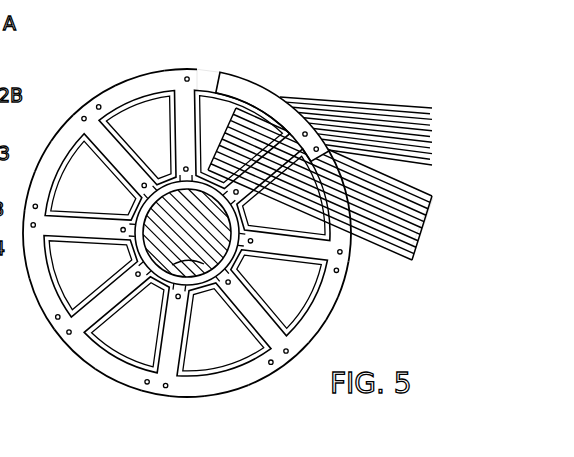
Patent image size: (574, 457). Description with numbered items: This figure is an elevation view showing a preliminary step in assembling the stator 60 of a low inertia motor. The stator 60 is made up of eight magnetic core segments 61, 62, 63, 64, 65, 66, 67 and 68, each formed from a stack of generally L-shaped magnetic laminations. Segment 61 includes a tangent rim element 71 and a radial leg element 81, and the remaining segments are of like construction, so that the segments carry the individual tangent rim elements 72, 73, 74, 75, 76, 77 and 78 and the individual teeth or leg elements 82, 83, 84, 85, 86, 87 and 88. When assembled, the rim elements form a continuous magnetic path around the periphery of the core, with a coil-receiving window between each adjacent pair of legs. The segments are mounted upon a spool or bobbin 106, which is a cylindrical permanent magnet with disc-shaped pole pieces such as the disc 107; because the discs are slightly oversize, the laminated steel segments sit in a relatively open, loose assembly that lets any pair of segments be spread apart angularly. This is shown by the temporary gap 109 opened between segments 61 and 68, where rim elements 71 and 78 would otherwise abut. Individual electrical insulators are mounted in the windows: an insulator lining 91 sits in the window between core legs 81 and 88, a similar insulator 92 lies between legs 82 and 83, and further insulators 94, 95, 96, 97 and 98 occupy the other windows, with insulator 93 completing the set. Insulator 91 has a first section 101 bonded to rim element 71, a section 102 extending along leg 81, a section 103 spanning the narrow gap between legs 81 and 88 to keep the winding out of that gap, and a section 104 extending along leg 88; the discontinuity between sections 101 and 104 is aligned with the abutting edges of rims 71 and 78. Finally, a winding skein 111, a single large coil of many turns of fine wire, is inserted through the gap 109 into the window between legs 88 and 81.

The stator 60 is at (263, 80).
The magnetic core segment 61 is at (361, 69).
The magnetic core segment 62 is at (347, 250).
The magnetic core segment 63 is at (293, 350).
The magnetic core segment 64 is at (182, 392).
The magnetic core segment 65 is at (78, 342).
The magnetic core segment 66 is at (14, 257).
The magnetic core segment 67 is at (68, 125).
The magnetic core segment 68 is at (141, 82).
The tangent rim element 71 is at (243, 86).
The tangent rim element 72 is at (377, 257).
The tangent rim element 73 is at (323, 303).
The tangent rim element 74 is at (247, 388).
The tangent rim element 75 is at (128, 380).
The tangent rim element 76 is at (48, 307).
The tangent rim element 77 is at (33, 192).
The tangent rim element 78 is at (98, 97).
The radial leg element 81 is at (268, 236).
The leg element 82 is at (326, 284).
The leg element 83 is at (312, 328).
The leg element 84 is at (160, 380).
The leg element 85 is at (100, 320).
The leg element 86 is at (72, 239).
The leg element 87 is at (63, 137).
The leg element 88 is at (190, 70).
The electrical insulator lining 91 is at (231, 106).
The insulator 92 is at (258, 236).
The pocket 93 is at (268, 262).
The insulator 94 is at (243, 330).
The insulator 95 is at (125, 312).
The insulator 96 is at (64, 247).
The insulator 97 is at (98, 172).
The insulator 98 is at (165, 143).
The first section of insulator 101 is at (268, 142).
The insulator section 102 is at (292, 125).
The insulator section 103 is at (187, 233).
The insulator section 104 is at (206, 72).
The bobbin 106 is at (187, 247).
The disc-shaped pole piece 107 is at (203, 308).
The temporary gap 109 is at (216, 74).
The winding skein 111 is at (405, 117).